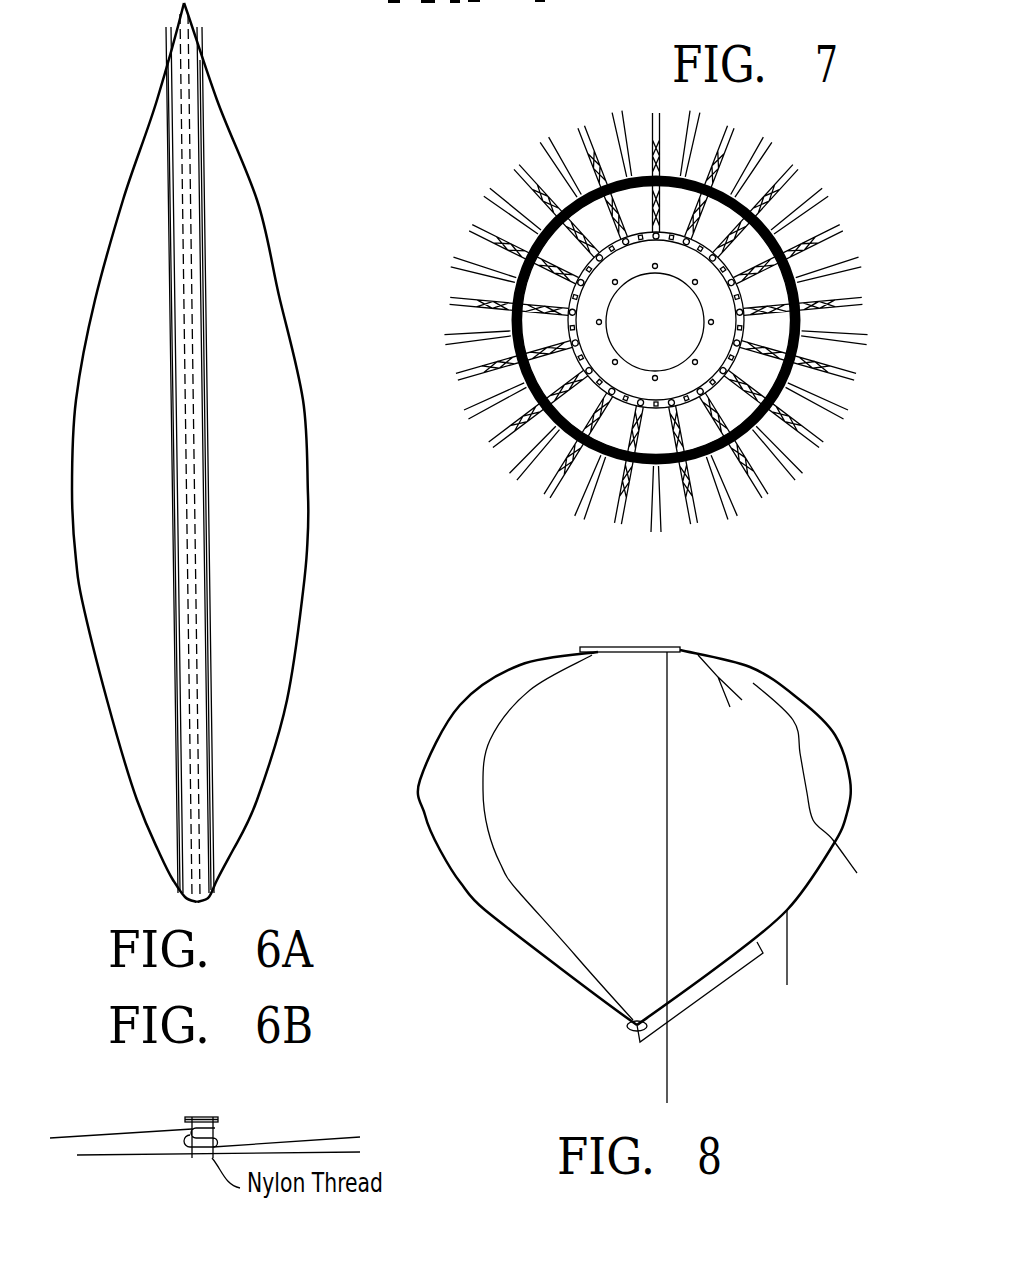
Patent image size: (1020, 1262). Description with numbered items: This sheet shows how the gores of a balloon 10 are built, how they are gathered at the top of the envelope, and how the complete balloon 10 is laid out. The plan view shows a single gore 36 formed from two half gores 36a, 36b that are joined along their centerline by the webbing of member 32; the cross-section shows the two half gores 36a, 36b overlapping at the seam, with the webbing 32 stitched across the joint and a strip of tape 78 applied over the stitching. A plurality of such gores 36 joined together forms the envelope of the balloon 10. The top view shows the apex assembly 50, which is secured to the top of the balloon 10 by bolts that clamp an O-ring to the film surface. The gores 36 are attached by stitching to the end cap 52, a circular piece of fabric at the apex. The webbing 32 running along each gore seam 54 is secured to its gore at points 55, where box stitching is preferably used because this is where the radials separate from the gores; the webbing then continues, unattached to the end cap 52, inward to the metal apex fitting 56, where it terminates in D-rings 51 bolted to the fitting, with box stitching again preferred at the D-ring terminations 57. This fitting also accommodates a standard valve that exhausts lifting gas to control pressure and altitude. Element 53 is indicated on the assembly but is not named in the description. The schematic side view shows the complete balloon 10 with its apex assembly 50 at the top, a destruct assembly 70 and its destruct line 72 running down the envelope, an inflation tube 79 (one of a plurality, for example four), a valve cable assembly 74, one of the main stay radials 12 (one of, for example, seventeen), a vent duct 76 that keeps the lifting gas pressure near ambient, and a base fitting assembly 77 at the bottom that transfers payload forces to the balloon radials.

In FIG. 8, the balloon 10 is at (631, 851).
In FIG. 8, the main stay radials 12 is at (790, 960).
In FIG. 6A, the webbing member 32 is at (187, 227).
In FIG. 6B, the webbing member 32 is at (200, 1117).
In FIG. 7, the webbing member 32 is at (603, 487).
In FIG. 7, the gore 36 is at (609, 156).
In FIG. 6A, the half gore 36a is at (147, 257).
In FIG. 6B, the half gore 36a is at (138, 1130).
In FIG. 6A, the half gore 36b is at (225, 160).
In FIG. 6B, the half gore 36b is at (275, 1142).
In FIG. 7, the apex assembly 50 is at (644, 323).
In FIG. 8, the apex assembly 50 is at (612, 648).
In FIG. 7, the D-rings 51 is at (592, 320).
In FIG. 7, the end cap 52 is at (707, 320).
In FIG. 7, the rib 53 is at (786, 435).
In FIG. 7, the gore seam 54 is at (549, 461).
In FIG. 7, the attachment points 55 is at (521, 212).
In FIG. 7, the apex fitting 56 is at (494, 407).
In FIG. 7, the D-ring terminations 57 is at (489, 294).
In FIG. 8, the destruct assembly 70 is at (712, 660).
In FIG. 8, the destruct line 72 is at (675, 1085).
In FIG. 8, the valve cable assembly 74 is at (517, 890).
In FIG. 8, the vent duct 76 is at (695, 1003).
In FIG. 8, the base fitting assembly 77 is at (628, 1032).
In FIG. 6A, the tape 78 is at (208, 795).
In FIG. 6B, the tape 78 is at (167, 1157).
In FIG. 8, the inflation tube 79 is at (800, 753).